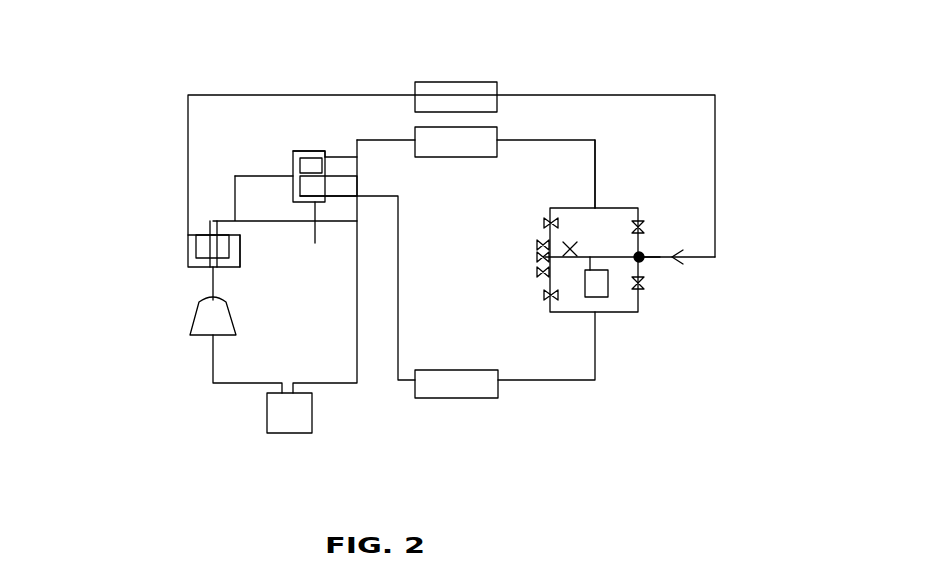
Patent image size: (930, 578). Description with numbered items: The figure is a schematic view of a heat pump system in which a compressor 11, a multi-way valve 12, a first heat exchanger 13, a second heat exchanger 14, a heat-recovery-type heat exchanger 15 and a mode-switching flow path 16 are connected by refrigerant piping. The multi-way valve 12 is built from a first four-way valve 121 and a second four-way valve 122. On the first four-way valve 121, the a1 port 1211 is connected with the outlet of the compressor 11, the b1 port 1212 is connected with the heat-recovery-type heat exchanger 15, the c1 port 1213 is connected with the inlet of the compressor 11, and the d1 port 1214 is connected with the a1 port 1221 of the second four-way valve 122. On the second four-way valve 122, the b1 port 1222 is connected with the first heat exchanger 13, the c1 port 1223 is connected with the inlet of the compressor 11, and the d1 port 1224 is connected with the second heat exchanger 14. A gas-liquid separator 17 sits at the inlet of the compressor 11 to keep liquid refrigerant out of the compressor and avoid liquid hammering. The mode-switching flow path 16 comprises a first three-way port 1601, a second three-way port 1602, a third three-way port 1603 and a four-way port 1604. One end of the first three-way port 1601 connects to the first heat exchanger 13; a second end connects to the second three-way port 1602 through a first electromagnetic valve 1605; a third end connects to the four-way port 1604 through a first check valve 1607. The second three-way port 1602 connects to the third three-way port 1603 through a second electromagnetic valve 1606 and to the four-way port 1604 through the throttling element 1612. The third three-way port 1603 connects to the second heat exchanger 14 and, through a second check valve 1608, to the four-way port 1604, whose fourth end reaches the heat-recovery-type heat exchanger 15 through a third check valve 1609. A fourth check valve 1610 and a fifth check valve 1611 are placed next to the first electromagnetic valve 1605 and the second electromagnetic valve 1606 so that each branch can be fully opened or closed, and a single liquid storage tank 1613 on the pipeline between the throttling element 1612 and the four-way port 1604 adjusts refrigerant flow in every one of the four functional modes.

The compressor 11 is at (203, 320).
The multi-way valve 12 is at (212, 168).
The first four-way valve 121 is at (205, 237).
The a1 port of the first four-way valve 1211 is at (210, 272).
The b1 port of the first four-way valve 1212 is at (188, 248).
The c1 port of the first four-way valve 1213 is at (212, 232).
The d1 port of the first four-way valve 1214 is at (233, 238).
The second four-way valve 122 is at (291, 162).
The a1 port of the second four-way valve 1221 is at (285, 176).
The b1 port of the second four-way valve 1222 is at (309, 153).
The c1 port of the second four-way valve 1223 is at (313, 168).
The d1 port of the second four-way valve 1224 is at (315, 240).
The first heat exchanger 13 is at (480, 140).
The second heat exchanger 14 is at (465, 387).
The heat-recovery-type heat exchanger 15 is at (444, 93).
The mode-switching flow path 16 is at (568, 206).
The first three-way port 1601 is at (600, 207).
The second three-way port 1602 is at (537, 257).
The third three-way port 1603 is at (594, 313).
The four-way port 1604 is at (644, 260).
The first electromagnetic valve 1605 is at (538, 245).
The second electromagnetic valve 1606 is at (538, 272).
The first check valve 1607 is at (641, 227).
The second check valve 1608 is at (640, 285).
The third check valve 1609 is at (683, 257).
The fourth check valve 1610 is at (545, 222).
The fifth check valve 1611 is at (546, 295).
The throttling element 1612 is at (570, 248).
The liquid storage tank 1613 is at (643, 255).
The gas-liquid separator 17 is at (285, 415).